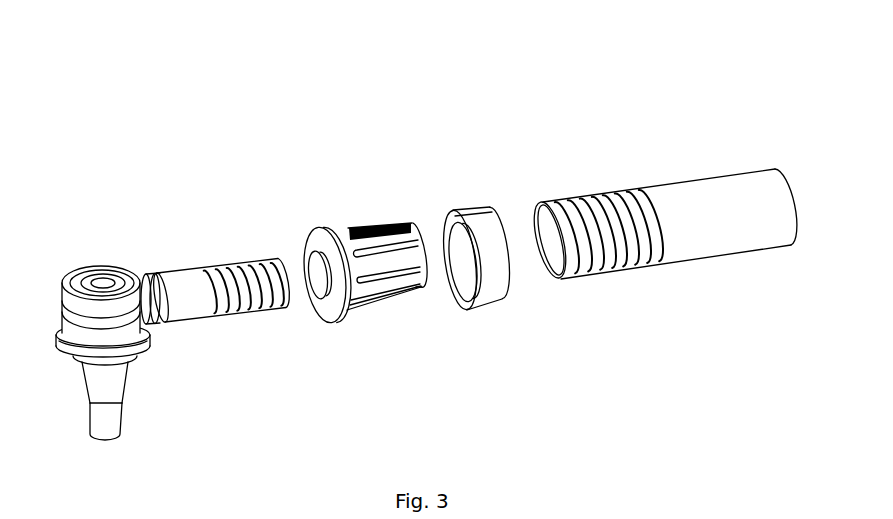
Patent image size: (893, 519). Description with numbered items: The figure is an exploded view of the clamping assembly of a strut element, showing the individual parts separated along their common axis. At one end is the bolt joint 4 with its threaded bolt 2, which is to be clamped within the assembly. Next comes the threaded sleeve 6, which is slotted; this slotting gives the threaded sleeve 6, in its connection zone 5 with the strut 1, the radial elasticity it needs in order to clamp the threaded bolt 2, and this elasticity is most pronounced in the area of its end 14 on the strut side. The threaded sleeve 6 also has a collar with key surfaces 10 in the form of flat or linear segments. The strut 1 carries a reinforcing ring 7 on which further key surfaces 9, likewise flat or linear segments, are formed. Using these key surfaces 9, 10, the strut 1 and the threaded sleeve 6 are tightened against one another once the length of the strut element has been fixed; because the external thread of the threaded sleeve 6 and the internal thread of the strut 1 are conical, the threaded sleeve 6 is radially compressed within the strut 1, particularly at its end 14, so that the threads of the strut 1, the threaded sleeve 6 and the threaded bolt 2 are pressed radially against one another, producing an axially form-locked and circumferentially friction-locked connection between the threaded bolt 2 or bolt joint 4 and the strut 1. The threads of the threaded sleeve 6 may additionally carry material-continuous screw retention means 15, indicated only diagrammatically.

The strut 1 is at (662, 157).
The threaded bolt 2 is at (222, 290).
The bolt joint 4 is at (77, 210).
The connection zone 5 is at (643, 180).
The threaded sleeve 6 is at (345, 235).
The reinforcing ring 7 is at (497, 261).
The key surfaces 9 is at (477, 206).
The key surfaces 10 is at (323, 235).
The end on the strut side 14 is at (423, 284).
The screw retention means 15 is at (355, 222).